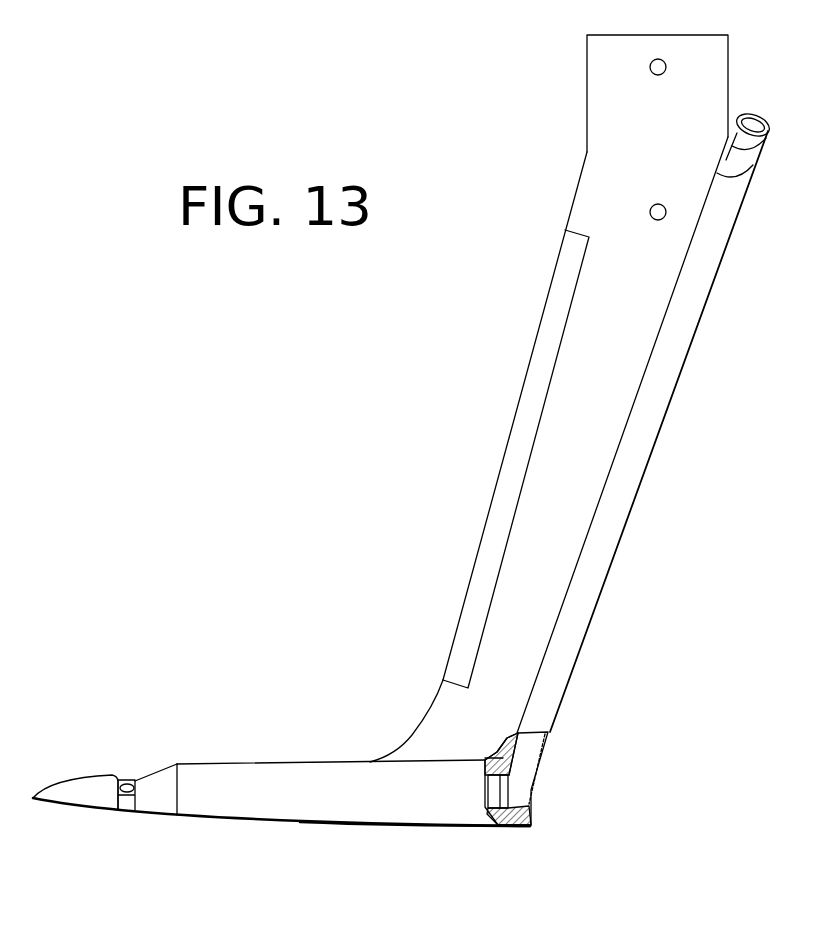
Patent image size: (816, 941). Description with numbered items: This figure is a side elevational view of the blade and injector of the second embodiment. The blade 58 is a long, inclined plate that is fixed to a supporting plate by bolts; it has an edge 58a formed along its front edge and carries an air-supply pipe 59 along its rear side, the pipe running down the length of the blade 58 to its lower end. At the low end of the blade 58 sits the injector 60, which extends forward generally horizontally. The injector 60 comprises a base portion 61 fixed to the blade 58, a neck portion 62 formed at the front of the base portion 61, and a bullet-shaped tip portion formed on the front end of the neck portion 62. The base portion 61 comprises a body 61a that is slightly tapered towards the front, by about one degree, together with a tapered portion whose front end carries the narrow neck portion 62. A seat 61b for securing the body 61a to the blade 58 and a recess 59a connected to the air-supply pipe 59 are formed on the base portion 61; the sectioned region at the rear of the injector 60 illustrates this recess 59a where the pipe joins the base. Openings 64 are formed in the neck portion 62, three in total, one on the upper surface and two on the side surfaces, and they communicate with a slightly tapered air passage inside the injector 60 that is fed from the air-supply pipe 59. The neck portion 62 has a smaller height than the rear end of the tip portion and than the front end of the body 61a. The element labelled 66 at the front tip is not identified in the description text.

The blade 58 is at (622, 412).
The edge 58a is at (520, 397).
The air-supply pipe 59 is at (690, 340).
The recess 59a is at (531, 797).
The injector 60 is at (319, 731).
The base portion 61 is at (165, 808).
The body 61a is at (409, 821).
The seat 61b is at (447, 760).
The neck portion 62 is at (127, 812).
The openings 64 is at (128, 780).
The tip cap 66 is at (73, 800).